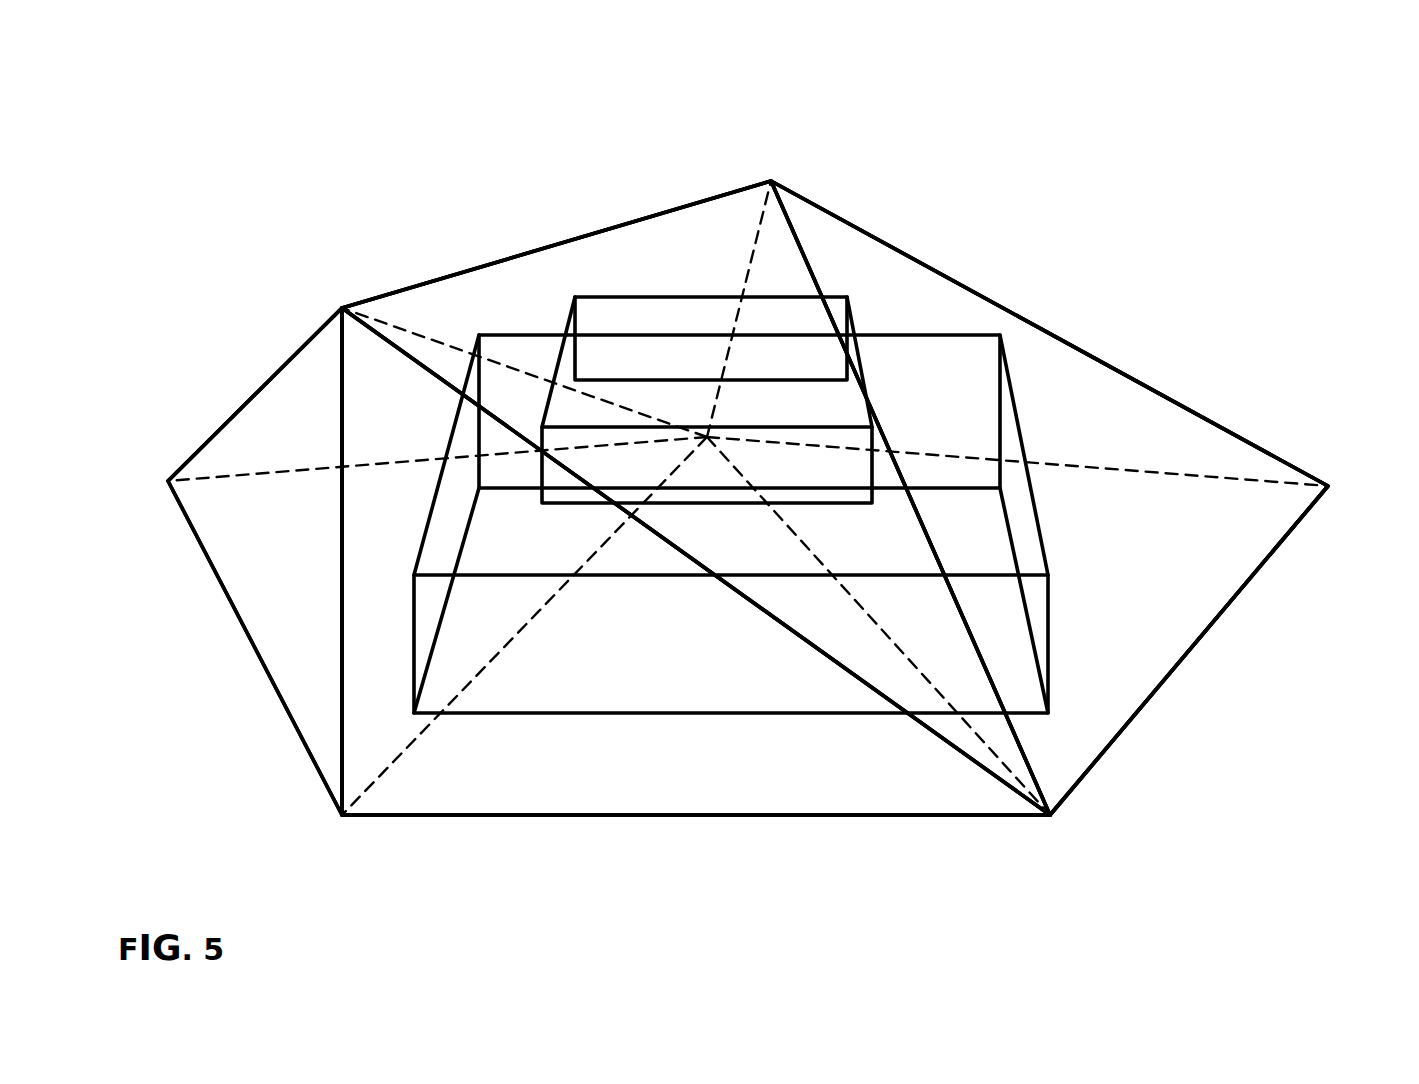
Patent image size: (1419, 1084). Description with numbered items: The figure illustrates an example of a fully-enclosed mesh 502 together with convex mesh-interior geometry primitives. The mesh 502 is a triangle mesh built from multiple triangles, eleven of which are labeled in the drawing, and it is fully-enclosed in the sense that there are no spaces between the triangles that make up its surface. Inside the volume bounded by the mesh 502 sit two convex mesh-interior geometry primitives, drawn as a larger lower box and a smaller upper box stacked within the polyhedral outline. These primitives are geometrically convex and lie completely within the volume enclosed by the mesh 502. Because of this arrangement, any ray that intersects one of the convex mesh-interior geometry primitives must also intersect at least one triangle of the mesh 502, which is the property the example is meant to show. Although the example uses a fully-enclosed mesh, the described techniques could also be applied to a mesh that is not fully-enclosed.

The mesh 502 is at (482, 262).